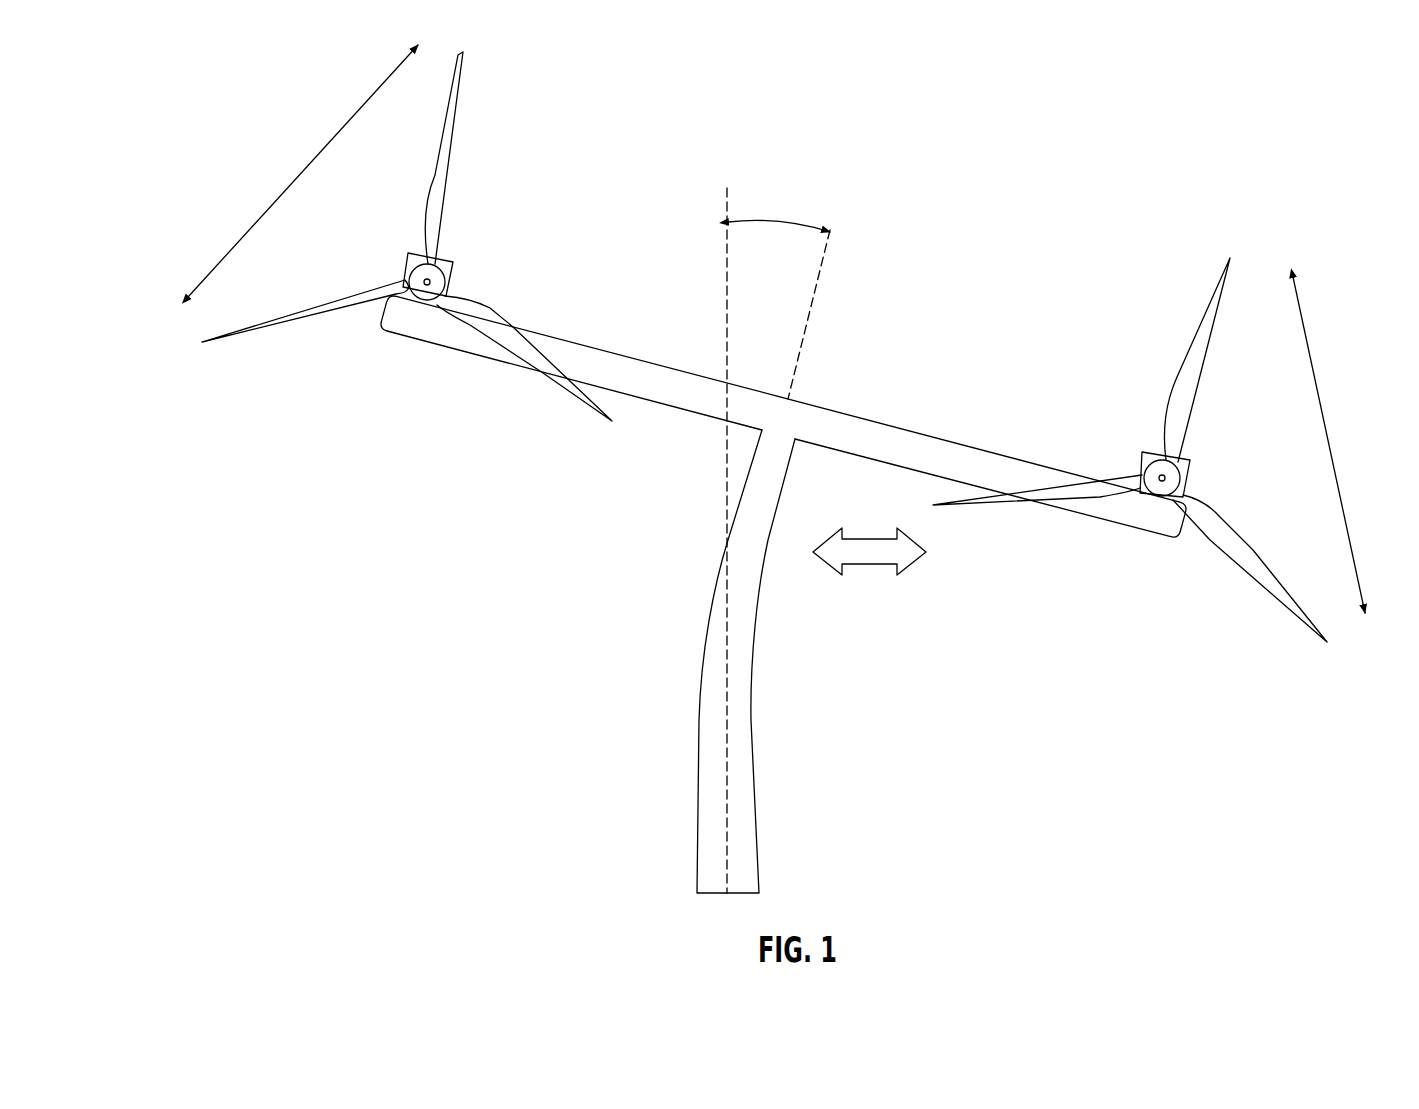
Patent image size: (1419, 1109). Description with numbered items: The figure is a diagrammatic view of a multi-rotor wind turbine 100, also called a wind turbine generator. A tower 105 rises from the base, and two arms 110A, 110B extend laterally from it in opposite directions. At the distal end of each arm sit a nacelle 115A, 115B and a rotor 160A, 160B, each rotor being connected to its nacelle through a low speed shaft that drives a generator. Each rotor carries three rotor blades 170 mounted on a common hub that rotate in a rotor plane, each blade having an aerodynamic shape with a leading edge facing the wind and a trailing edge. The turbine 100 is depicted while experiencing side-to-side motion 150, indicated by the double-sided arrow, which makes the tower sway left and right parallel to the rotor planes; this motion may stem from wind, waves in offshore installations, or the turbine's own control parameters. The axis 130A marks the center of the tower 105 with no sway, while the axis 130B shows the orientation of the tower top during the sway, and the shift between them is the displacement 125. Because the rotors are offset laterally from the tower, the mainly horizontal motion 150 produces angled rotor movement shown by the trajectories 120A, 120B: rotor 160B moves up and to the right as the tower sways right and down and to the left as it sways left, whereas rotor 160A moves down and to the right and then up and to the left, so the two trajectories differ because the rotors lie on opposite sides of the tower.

The MR wind turbine 100 is at (191, 87).
The tower 105 is at (752, 718).
The arm 110A is at (867, 417).
The arm 110B is at (650, 405).
The nacelle 115A is at (1188, 480).
The nacelle 115B is at (452, 280).
The trajectory 120A is at (1328, 445).
The trajectory 120B is at (283, 192).
The displacement 125 is at (772, 220).
The axis 130A is at (725, 272).
The axis 130B is at (815, 302).
The side-to-side motion 150 is at (869, 565).
The rotor 160A is at (1130, 441).
The rotor 160B is at (407, 236).
The rotor blade 170 is at (1217, 267).